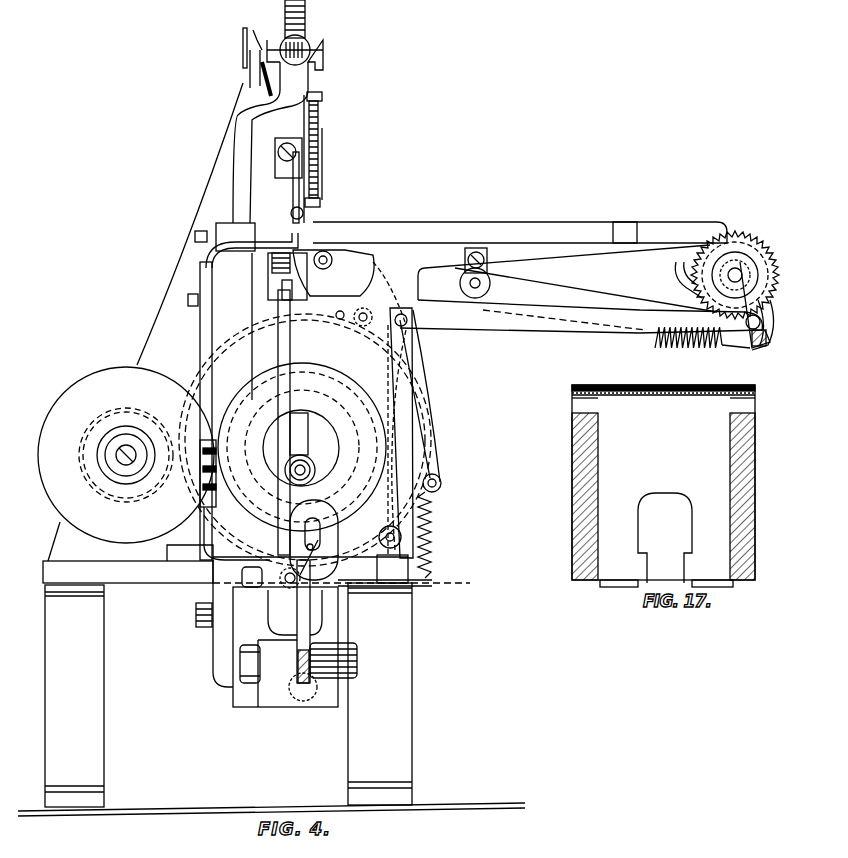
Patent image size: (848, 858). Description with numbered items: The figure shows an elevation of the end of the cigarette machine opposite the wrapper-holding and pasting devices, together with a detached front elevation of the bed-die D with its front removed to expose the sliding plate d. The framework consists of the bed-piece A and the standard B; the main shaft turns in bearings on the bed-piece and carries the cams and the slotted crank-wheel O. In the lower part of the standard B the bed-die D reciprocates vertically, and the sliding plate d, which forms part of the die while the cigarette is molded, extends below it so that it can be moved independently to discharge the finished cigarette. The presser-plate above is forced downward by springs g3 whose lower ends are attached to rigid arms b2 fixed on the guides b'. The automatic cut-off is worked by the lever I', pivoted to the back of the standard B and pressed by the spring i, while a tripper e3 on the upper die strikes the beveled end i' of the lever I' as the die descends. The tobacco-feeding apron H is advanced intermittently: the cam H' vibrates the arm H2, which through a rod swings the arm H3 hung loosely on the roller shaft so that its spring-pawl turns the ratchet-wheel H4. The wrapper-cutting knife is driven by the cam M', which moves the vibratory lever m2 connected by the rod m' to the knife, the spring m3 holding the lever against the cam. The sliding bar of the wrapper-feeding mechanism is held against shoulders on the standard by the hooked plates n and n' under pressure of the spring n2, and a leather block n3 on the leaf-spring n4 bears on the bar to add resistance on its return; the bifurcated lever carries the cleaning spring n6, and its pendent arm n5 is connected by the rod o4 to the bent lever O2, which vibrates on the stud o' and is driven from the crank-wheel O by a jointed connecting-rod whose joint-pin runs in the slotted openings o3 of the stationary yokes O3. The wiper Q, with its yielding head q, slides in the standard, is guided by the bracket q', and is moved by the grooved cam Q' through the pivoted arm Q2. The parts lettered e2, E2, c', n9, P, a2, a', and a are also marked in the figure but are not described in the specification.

In FIG. 4, the bed-piece A is at (256, 676).
In FIG. 4, the arm Q2 is at (202, 348).
In FIG. 4, the lever I' is at (267, 136).
In FIG. 4, the spring i is at (270, 79).
In FIG. 4, the tripper e3 is at (236, 44).
In FIG. 4, the beveled end i' is at (257, 29).
In FIG. 4, the threaded stem e2 is at (303, 19).
In FIG. 4, the ball joint bracket E2 is at (318, 58).
In FIG. 4, the guides b' is at (323, 99).
In FIG. 4, the springs g3 is at (318, 126).
In FIG. 4, the rigid arms b2 is at (314, 203).
In FIG. 4, the standard B is at (277, 169).
In FIG. 4, the bracket q' is at (289, 187).
In FIG. 4, the wiper Q is at (284, 214).
In FIG. 4, the block c' is at (246, 254).
In FIG. 4, the cam M' is at (291, 276).
In FIG. 4, the block n9 is at (294, 301).
In FIG. 4, the cam plate P is at (349, 288).
In FIG. 4, the slotted crank-wheel O is at (302, 447).
In FIG. 4, the cam H' is at (311, 426).
In FIG. 4, the grooved cam Q' is at (260, 422).
In FIG. 4, the stud o' is at (329, 566).
In FIG. 4, the head or band q is at (235, 500).
In FIG. 4, the stationary yokes O3 is at (293, 540).
In FIG. 4, the slotted openings o3 is at (312, 547).
In FIG. 4, the rod o4 is at (283, 583).
In FIG. 4, the bent lever O2 is at (310, 627).
In FIG. 4, the arm H2 is at (408, 340).
In FIG. 4, the rod m' is at (421, 430).
In FIG. 4, the vibratory lever m2 is at (440, 486).
In FIG. 4, the spring m3 is at (434, 531).
In FIG. 4, the hooked plate n' is at (520, 233).
In FIG. 4, the spring n2 is at (581, 316).
In FIG. 4, the endless apron H is at (567, 278).
In FIG. 4, the spring n6 is at (490, 284).
In FIG. 4, the pendent arm n5 is at (683, 280).
In FIG. 4, the ratchet-wheel H4 is at (776, 270).
In FIG. 4, the hooked plate n is at (763, 276).
In FIG. 4, the block n3 is at (771, 343).
In FIG. 4, the arm H3 is at (748, 352).
In FIG. 4, the leaf-spring n4 is at (688, 346).
In FIG. 17, the bed-die D is at (652, 482).
In FIG. 17, the top plate a2 is at (663, 380).
In FIG. 17, the sliding plate d is at (578, 408).
In FIG. 17, the plate edge a' is at (753, 400).
In FIG. 17, the die cavity a is at (666, 512).